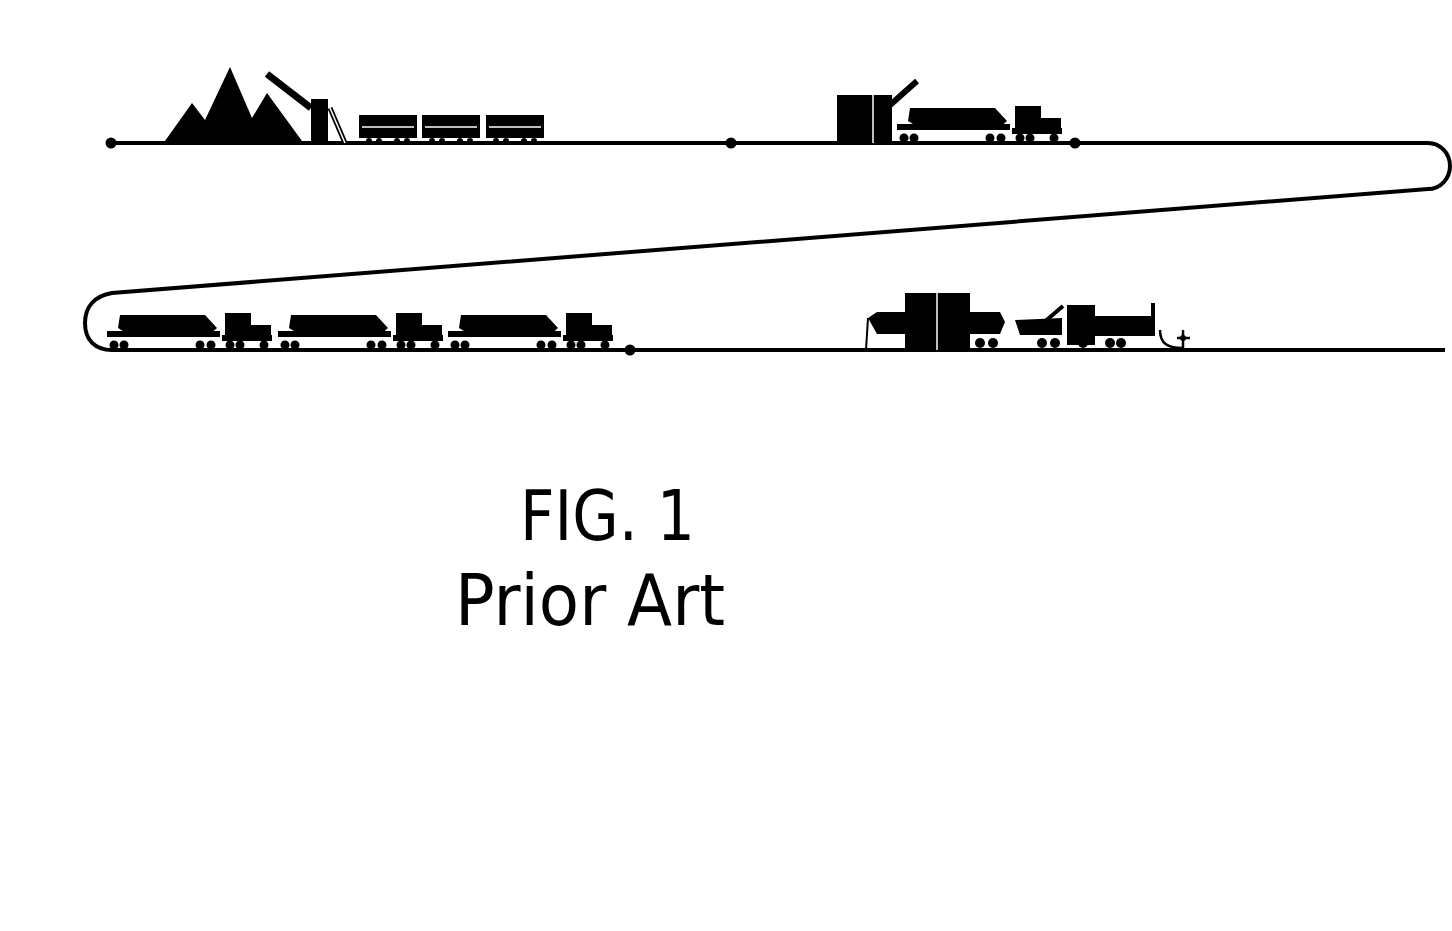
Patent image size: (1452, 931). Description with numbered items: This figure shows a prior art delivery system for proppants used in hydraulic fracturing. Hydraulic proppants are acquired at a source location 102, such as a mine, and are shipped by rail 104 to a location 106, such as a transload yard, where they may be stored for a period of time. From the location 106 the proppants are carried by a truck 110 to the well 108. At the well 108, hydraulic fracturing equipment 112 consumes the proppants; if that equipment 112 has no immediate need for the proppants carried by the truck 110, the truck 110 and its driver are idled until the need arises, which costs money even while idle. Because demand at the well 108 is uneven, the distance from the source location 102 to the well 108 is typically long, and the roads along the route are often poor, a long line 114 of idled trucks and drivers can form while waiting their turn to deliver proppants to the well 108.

The source location 102 is at (111, 140).
The rail 104 is at (447, 116).
The location 106 is at (731, 140).
The well 108 is at (1184, 336).
The truck 110 is at (946, 110).
The hydraulic fracturing equipment 112 is at (1180, 277).
The long line 114 is at (618, 378).